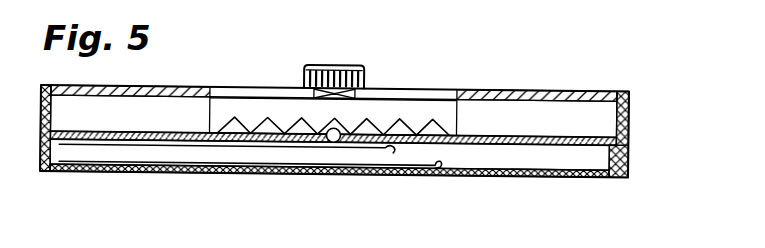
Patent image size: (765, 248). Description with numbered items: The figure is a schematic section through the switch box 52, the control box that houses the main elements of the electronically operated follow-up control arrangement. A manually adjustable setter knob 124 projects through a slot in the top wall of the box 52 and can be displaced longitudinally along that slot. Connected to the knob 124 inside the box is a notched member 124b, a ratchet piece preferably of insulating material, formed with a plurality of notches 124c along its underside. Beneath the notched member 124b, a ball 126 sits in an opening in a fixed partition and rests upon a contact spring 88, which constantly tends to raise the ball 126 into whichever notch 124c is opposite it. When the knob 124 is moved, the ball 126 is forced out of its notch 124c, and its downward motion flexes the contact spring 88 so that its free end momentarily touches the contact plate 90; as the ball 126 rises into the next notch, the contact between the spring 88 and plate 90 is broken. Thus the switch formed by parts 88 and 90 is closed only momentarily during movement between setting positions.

The switch box 52 is at (626, 126).
The setter knob 124 is at (335, 77).
The notched member 124b is at (430, 107).
The notches 124c is at (372, 123).
The ball 126 is at (333, 144).
The contact spring 88 is at (392, 151).
The contact plate 90 is at (440, 166).